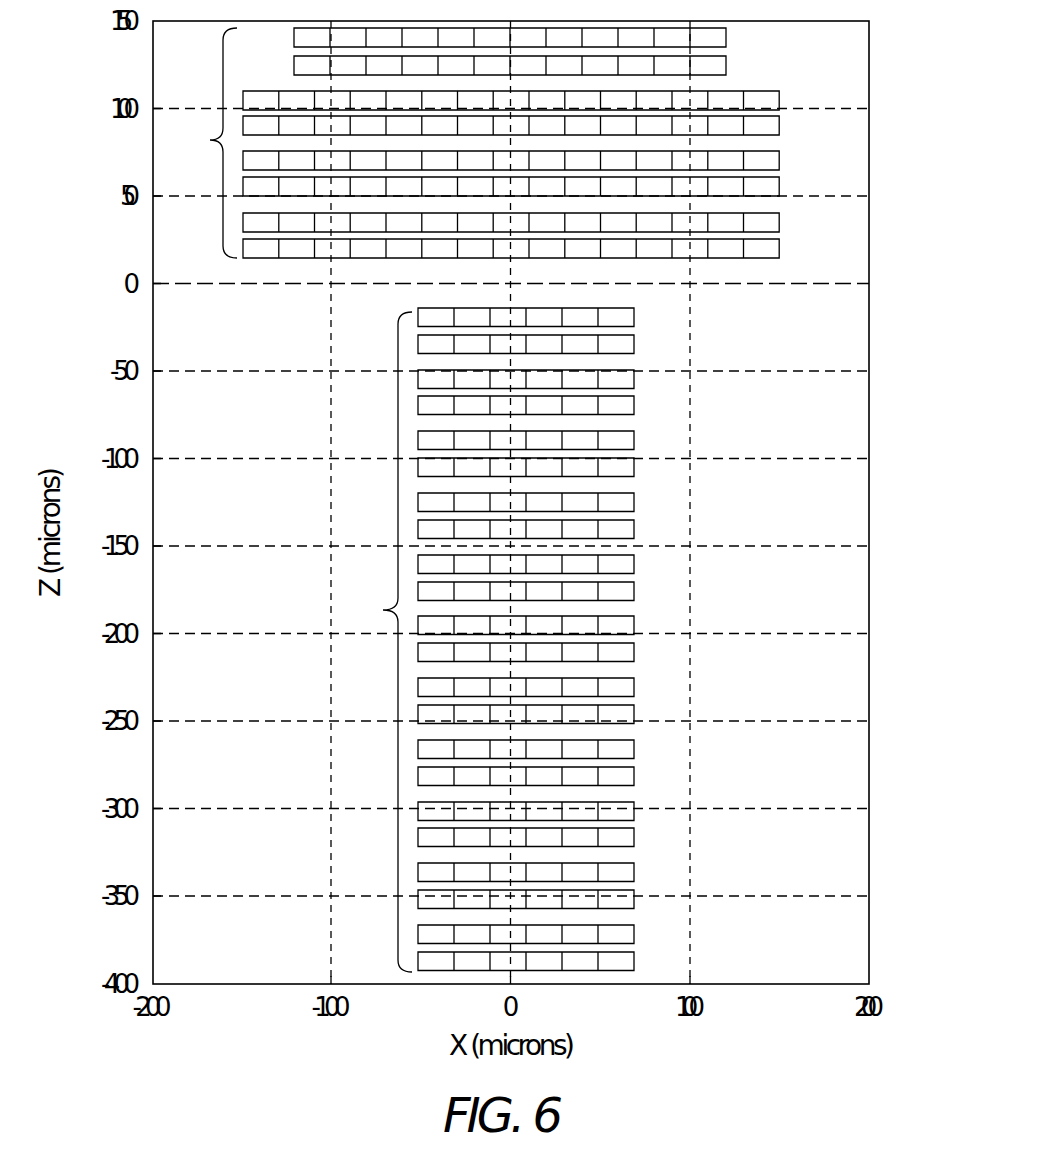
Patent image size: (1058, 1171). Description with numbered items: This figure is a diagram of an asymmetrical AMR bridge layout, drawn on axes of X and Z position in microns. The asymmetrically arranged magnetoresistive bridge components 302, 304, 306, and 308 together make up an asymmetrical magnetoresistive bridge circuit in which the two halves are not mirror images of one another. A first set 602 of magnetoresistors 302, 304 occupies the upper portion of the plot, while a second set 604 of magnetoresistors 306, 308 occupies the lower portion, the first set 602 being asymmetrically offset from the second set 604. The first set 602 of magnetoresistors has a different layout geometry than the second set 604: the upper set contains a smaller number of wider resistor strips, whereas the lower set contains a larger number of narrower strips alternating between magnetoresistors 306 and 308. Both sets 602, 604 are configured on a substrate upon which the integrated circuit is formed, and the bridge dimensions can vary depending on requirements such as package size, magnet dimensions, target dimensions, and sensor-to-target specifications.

The magnetoresistive bridge component 302 is at (726, 38).
The magnetoresistive bridge component 304 is at (726, 66).
The magnetoresistive bridge component 306 is at (634, 317).
The magnetoresistive bridge component 308 is at (634, 344).
The first set of magnetoresistors 602 is at (203, 143).
The second set of magnetoresistors 604 is at (377, 642).